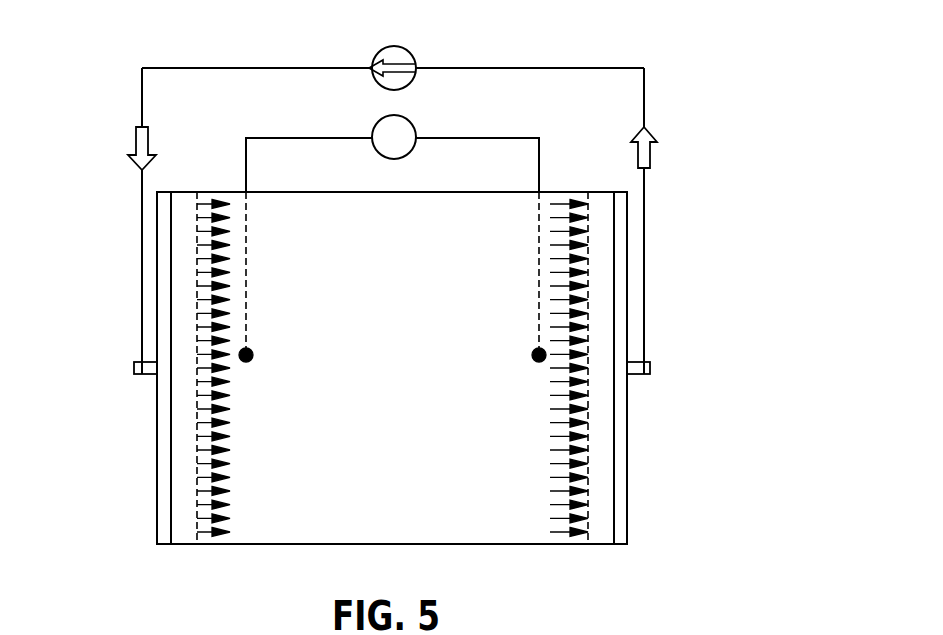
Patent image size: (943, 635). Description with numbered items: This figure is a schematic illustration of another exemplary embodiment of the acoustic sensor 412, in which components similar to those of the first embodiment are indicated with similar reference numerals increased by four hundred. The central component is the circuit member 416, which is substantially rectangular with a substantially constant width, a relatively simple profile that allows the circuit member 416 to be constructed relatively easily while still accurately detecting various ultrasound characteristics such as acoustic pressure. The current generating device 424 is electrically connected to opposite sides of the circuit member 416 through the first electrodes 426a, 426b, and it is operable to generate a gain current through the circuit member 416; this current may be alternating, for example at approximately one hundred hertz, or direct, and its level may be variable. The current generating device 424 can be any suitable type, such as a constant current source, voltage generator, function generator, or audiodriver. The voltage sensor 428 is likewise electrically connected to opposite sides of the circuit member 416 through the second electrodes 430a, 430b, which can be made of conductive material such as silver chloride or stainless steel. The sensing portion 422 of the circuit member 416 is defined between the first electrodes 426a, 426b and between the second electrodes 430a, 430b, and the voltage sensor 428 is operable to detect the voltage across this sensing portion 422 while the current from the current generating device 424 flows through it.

The acoustic sensor 412 is at (412, 304).
The circuit member 416 is at (258, 544).
The sensing portion 422 is at (462, 468).
The current generating device 424 is at (412, 52).
The first electrode 426a is at (143, 377).
The first electrode 426b is at (640, 377).
The voltage sensor 428 is at (416, 125).
The second electrode 430a is at (252, 352).
The second electrode 430b is at (533, 357).